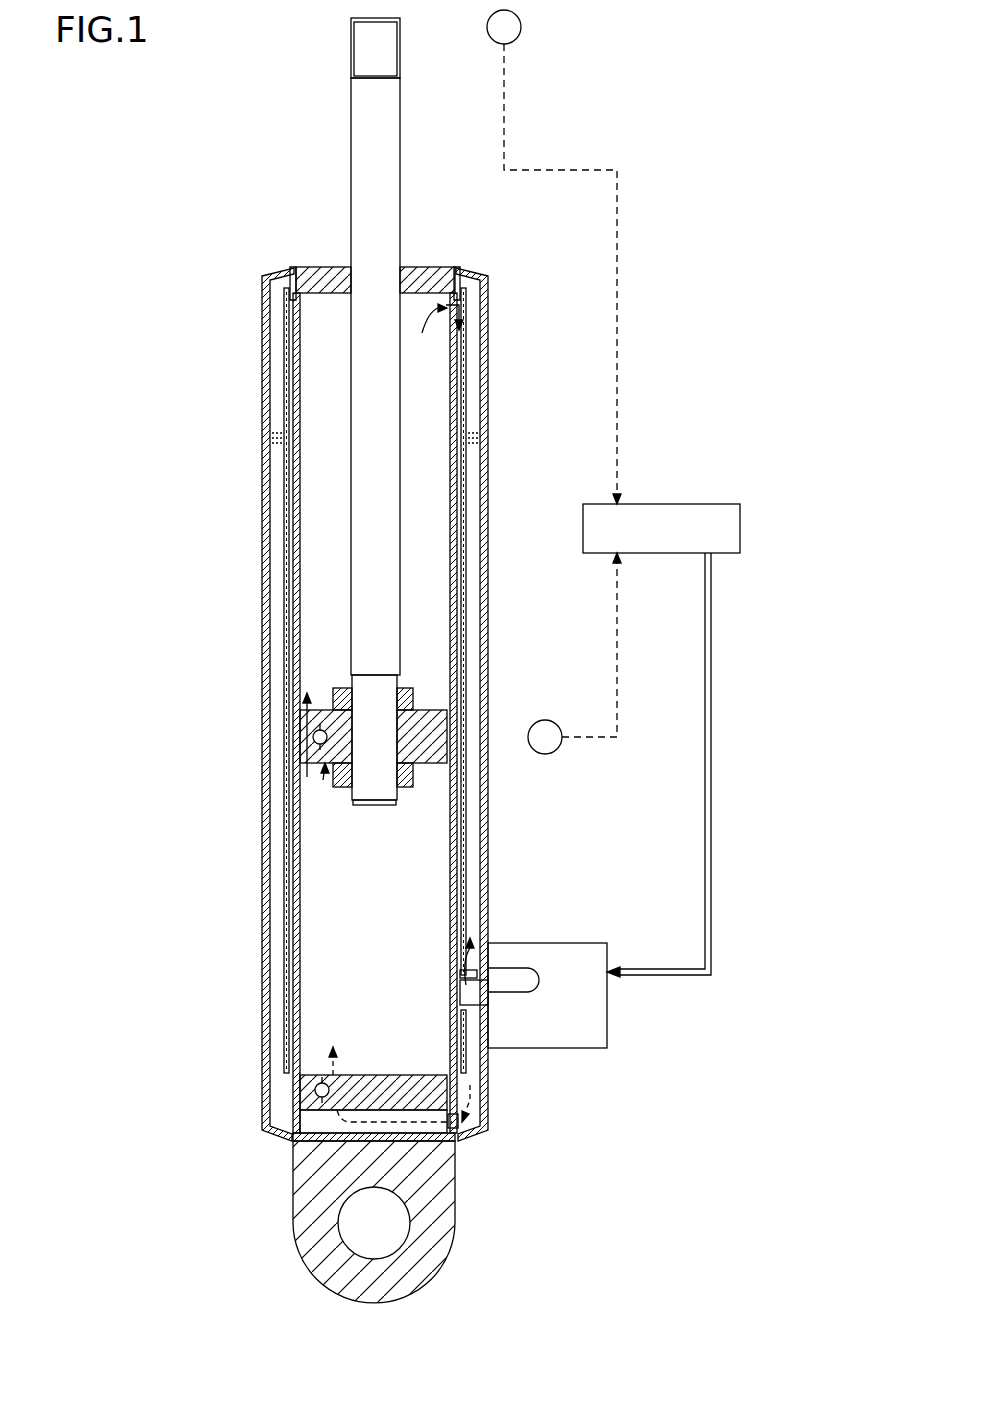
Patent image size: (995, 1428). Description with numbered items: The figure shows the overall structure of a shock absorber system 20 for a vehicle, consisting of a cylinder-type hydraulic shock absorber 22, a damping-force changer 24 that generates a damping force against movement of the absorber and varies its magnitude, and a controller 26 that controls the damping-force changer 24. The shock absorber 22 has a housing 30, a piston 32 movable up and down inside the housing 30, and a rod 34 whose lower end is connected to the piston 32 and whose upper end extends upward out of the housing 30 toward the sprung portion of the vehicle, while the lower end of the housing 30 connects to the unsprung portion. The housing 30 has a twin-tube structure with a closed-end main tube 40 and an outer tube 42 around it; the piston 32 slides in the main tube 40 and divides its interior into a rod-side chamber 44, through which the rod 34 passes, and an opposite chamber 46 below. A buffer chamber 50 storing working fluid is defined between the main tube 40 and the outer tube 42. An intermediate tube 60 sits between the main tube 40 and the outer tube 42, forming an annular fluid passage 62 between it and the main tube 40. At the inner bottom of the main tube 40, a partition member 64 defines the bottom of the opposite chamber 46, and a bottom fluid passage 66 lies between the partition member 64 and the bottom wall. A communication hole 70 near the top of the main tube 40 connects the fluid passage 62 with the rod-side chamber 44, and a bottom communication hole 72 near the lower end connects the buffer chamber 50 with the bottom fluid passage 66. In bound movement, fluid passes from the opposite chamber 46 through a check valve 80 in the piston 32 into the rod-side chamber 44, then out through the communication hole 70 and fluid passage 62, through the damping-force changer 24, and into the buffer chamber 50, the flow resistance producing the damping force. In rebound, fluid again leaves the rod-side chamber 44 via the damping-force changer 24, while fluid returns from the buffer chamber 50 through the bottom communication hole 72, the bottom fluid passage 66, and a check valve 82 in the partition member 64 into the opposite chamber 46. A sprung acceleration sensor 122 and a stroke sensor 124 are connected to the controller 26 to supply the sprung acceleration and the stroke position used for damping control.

The shock absorber system 20 is at (645, 92).
The hydraulic shock absorber 22 is at (298, 152).
The damping-force changer 24 is at (582, 911).
The controller 26 is at (732, 510).
The housing 30 is at (206, 329).
The piston 32 is at (325, 705).
The rod 34 is at (392, 203).
The main tube 40 is at (297, 507).
The outer tube 42 is at (268, 558).
The rod-side chamber 44 is at (335, 466).
The opposite chamber 46 is at (381, 944).
The buffer chamber 50 is at (277, 528).
The intermediate tube 60 is at (470, 600).
The annular fluid passage 62 is at (462, 632).
The partition member 64 is at (382, 1075).
The bottom fluid passage 66 is at (325, 1122).
The communication hole 70 is at (452, 305).
The bottom communication hole 72 is at (450, 1118).
The check valve 80 is at (322, 775).
The check valve 82 is at (293, 1100).
The sprung acceleration sensor 122 is at (522, 27).
The stroke sensor 124 is at (545, 720).